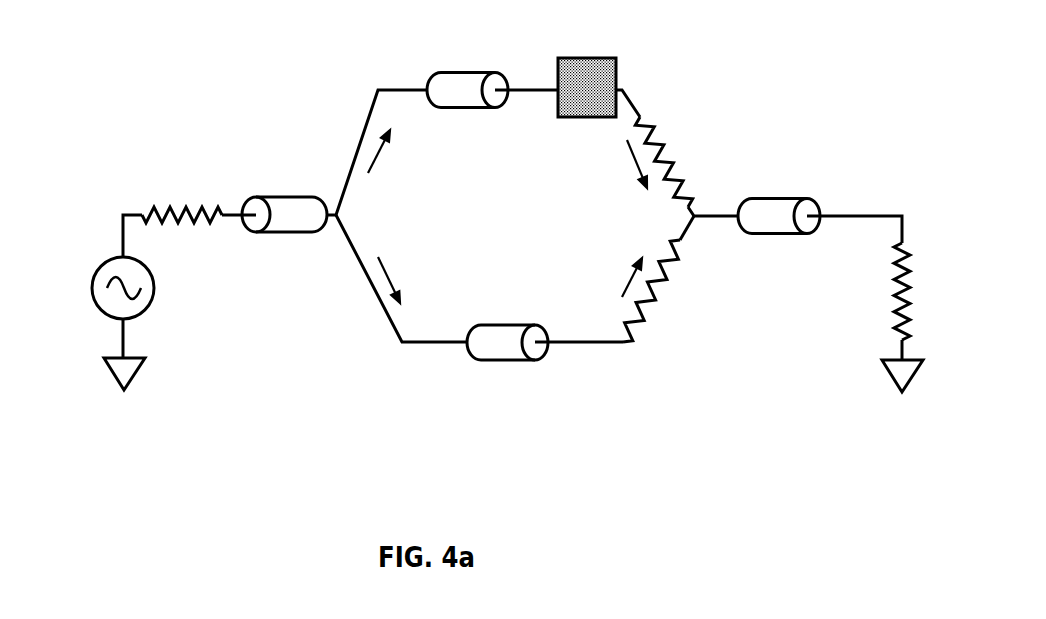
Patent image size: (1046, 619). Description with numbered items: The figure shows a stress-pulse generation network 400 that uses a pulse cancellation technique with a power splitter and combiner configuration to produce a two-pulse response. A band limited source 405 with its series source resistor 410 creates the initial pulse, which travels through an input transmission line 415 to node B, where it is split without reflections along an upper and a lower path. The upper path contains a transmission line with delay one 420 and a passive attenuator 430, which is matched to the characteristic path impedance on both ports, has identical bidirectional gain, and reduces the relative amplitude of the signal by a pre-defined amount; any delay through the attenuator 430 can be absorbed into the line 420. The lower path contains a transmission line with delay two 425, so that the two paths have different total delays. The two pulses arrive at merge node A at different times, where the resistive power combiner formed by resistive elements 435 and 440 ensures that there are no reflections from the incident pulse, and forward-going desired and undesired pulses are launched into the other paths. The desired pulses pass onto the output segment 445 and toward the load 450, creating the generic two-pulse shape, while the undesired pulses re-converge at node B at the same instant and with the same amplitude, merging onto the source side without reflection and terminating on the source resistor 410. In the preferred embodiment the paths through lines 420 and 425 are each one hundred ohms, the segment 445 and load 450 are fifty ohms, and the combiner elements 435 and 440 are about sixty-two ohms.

The Wheatstone bridge circuit 400 is at (496, 259).
The band limited source 405 is at (100, 288).
The source resistor 410 is at (182, 202).
The input transmission line Z1 415 is at (284, 188).
The delay 1 transmission line 420 is at (467, 81).
The delay 2 transmission line 425 is at (507, 356).
The passive attenuator 430 is at (587, 65).
The resistive power combiner 435 is at (665, 159).
The resistive power combiner 440 is at (659, 291).
The segment 445 is at (779, 202).
The load 450 is at (920, 291).